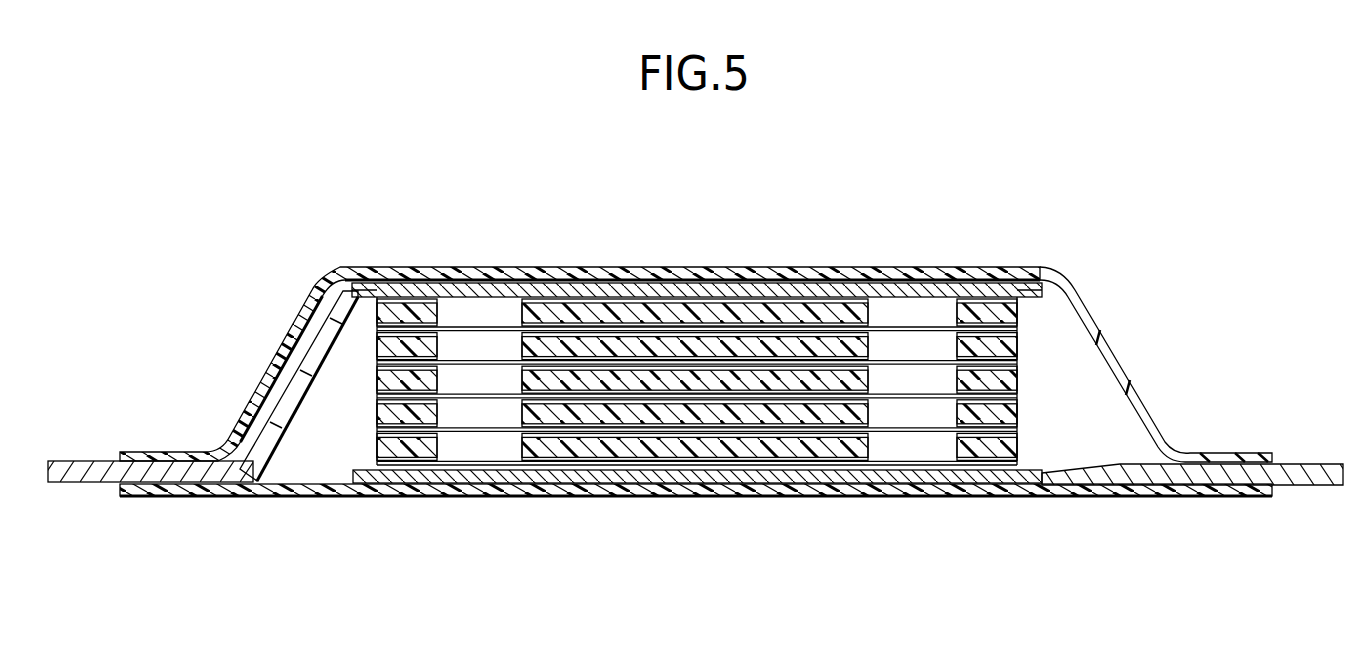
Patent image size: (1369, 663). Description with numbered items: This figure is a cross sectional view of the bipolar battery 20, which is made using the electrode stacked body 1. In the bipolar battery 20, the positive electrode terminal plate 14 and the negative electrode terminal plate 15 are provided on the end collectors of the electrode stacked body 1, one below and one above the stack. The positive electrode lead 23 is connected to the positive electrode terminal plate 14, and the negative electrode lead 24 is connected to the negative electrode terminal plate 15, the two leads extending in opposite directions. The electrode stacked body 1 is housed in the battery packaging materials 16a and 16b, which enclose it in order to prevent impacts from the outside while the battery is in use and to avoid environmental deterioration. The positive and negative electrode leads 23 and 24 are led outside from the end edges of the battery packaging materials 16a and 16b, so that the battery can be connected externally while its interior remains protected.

The bipolar battery 20 is at (330, 227).
The battery packaging material 16a is at (843, 268).
The battery packaging material 16b is at (843, 487).
The negative electrode terminal plate 15 is at (407, 287).
The positive electrode terminal plate 14 is at (500, 477).
The electrode stacked body 1 is at (366, 382).
The negative electrode lead 24 is at (90, 476).
The positive electrode lead 23 is at (1305, 485).